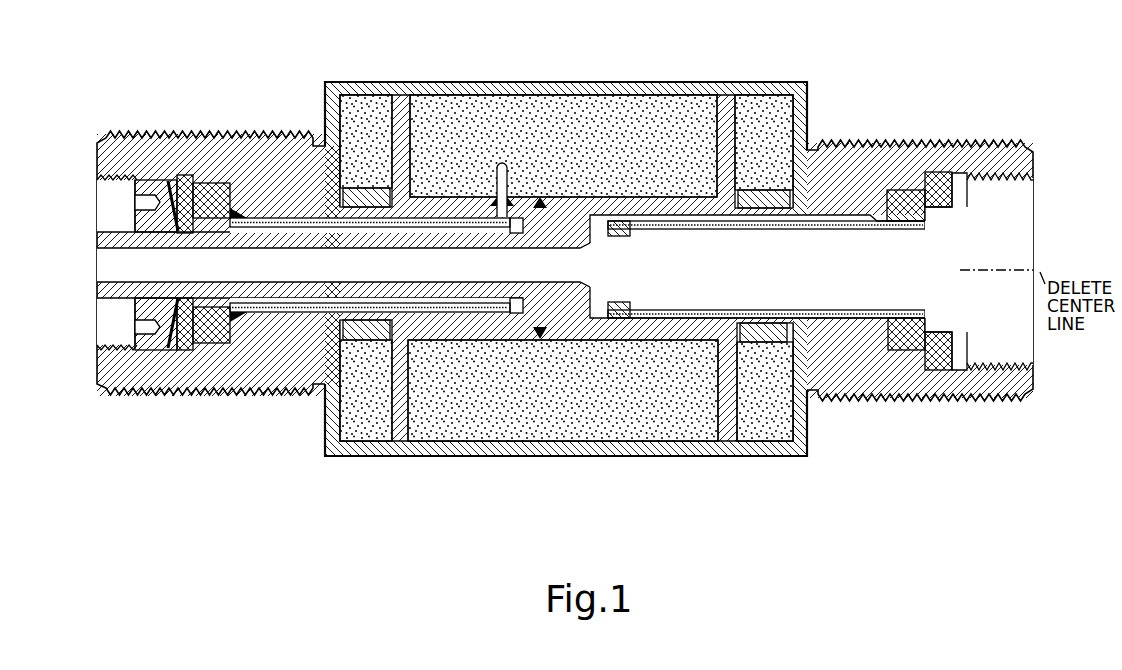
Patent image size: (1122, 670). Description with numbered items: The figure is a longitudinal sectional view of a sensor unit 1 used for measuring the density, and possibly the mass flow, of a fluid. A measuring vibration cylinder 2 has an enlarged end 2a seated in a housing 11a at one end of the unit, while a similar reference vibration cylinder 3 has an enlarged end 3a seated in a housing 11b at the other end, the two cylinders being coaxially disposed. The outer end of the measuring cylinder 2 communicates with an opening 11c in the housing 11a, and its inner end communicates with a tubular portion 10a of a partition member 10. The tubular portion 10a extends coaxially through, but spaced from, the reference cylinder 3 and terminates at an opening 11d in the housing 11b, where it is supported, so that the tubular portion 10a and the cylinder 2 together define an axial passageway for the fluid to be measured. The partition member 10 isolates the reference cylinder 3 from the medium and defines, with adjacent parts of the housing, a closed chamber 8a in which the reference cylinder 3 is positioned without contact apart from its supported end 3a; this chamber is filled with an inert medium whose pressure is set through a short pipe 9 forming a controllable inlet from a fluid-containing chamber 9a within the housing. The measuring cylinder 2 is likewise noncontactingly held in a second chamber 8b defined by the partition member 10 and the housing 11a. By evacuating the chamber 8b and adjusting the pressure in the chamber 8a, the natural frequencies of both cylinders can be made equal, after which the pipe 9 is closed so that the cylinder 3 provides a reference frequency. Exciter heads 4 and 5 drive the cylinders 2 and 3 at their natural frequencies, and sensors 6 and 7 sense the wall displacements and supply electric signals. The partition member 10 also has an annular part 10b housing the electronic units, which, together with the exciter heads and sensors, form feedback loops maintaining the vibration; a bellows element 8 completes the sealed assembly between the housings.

The housing 1 is at (507, 465).
The measuring vibration cylinder 2 is at (843, 323).
The enlarged end 2a is at (902, 340).
The reference vibration cylinder 3 is at (270, 317).
The enlarged end 3a is at (208, 328).
The exciter head 4 is at (754, 207).
The exciter head 5 is at (363, 190).
The sensor 6 is at (773, 342).
The sensor 7 is at (367, 340).
The bellows element 8 is at (445, 230).
The closed chamber 8a is at (227, 217).
The second chamber 8b is at (900, 190).
The pipe 9 is at (522, 143).
The fluid-containing chamber 9a is at (502, 163).
The partition member 10 is at (626, 213).
The tubular portion 10a is at (173, 250).
The annular part 10b is at (722, 137).
The housing 11a is at (867, 180).
The housing 11b is at (278, 176).
The opening 11c is at (1017, 237).
The opening 11d is at (108, 212).